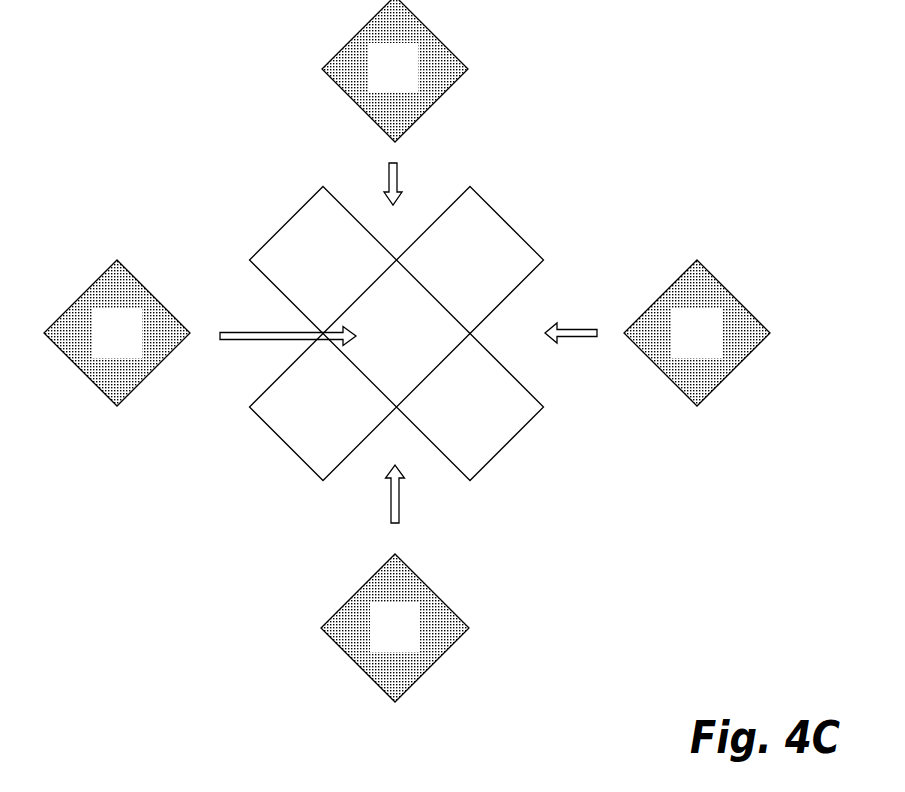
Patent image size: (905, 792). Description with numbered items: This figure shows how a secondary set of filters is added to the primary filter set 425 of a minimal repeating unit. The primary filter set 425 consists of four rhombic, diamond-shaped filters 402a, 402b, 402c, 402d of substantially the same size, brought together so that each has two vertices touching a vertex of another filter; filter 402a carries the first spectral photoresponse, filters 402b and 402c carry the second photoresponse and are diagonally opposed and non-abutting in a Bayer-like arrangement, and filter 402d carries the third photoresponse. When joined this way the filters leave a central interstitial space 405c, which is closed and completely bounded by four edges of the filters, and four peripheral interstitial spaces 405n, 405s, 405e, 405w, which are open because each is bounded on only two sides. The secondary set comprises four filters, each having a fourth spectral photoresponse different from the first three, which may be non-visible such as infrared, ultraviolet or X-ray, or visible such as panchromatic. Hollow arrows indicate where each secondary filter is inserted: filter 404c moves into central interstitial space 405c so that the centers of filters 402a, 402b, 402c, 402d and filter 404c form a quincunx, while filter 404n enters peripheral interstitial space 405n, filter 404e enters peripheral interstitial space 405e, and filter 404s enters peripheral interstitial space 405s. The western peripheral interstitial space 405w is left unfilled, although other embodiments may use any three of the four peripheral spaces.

The primary filter set 425 is at (370, 324).
The rhombic filter 402a is at (323, 260).
The rhombic filter 402b is at (470, 260).
The rhombic filter 402c is at (323, 407).
The rhombic filter 402d is at (470, 407).
The secondary-set filter 404n is at (392, 84).
The secondary-set filter 404c is at (115, 334).
The secondary-set filter 404e is at (695, 334).
The secondary-set filter 404s is at (391, 628).
The peripheral interstitial space 405n is at (372, 229).
The peripheral interstitial space 405w is at (240, 330).
The central interstitial space 405c is at (367, 345).
The peripheral interstitial space 405e is at (492, 345).
The peripheral interstitial space 405s is at (373, 452).